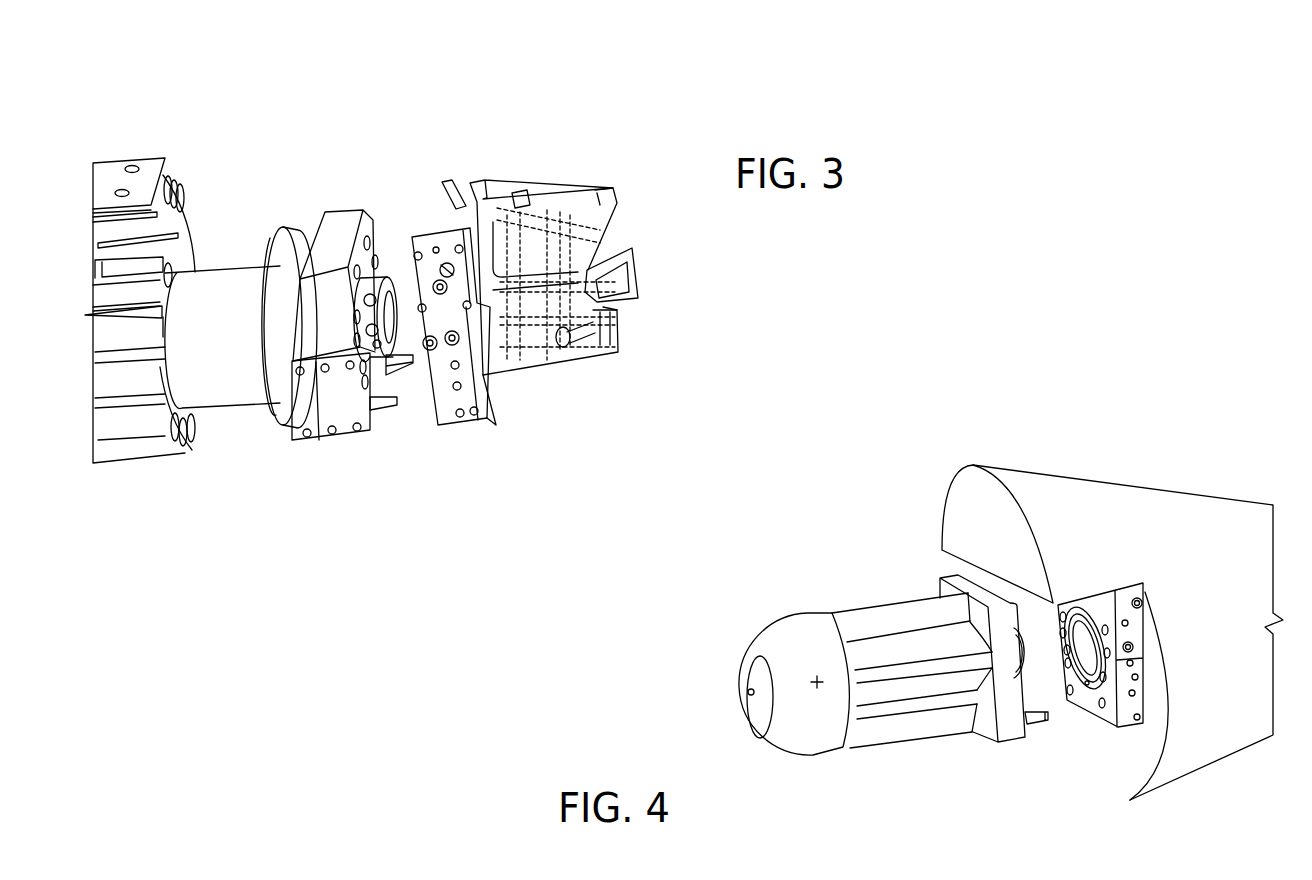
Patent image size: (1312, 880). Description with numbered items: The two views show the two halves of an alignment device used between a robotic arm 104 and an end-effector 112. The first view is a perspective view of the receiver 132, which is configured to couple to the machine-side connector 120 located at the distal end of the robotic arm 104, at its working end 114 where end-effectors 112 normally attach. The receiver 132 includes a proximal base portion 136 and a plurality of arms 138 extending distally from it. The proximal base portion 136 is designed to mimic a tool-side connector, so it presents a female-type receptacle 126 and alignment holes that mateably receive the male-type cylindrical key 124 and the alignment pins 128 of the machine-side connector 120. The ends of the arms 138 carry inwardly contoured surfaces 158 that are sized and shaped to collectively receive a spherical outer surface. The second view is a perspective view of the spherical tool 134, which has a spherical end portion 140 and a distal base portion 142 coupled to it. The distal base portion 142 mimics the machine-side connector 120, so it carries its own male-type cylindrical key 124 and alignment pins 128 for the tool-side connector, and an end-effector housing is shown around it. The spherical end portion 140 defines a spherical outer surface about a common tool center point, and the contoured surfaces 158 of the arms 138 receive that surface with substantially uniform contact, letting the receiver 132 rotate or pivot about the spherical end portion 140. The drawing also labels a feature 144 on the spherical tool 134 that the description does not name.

In FIG. 3, the robotic arm 104 is at (230, 292).
In FIG. 4, the robotic arm 104 is at (912, 670).
In FIG. 4, the end-effector 112 is at (1105, 498).
In FIG. 3, the working end 114 is at (152, 154).
In FIG. 3, the machine-side connector 120 is at (346, 218).
In FIG. 4, the machine-side connector 120 is at (1128, 706).
In FIG. 3, the male-type cylindrical key 124 is at (386, 268).
In FIG. 4, the male-type cylindrical key 124 is at (1020, 642).
In FIG. 4, the female-type receptacle 126 is at (1088, 614).
In FIG. 3, the alignment pins 128 is at (394, 407).
In FIG. 4, the alignment pins 128 is at (1037, 715).
In FIG. 3, the receiver 132 is at (516, 427).
In FIG. 4, the spherical tool 134 is at (893, 803).
In FIG. 3, the proximal base portion 136 is at (445, 417).
In FIG. 3, the arms 138 is at (562, 206).
In FIG. 4, the spherical end portion 140 is at (782, 633).
In FIG. 4, the distal base portion 142 is at (1008, 733).
In FIG. 4, the nose boss 144 is at (762, 708).
In FIG. 3, the inwardly contoured surfaces 158 is at (637, 290).
In FIG. 4, the inwardly contoured surfaces 158 is at (817, 688).